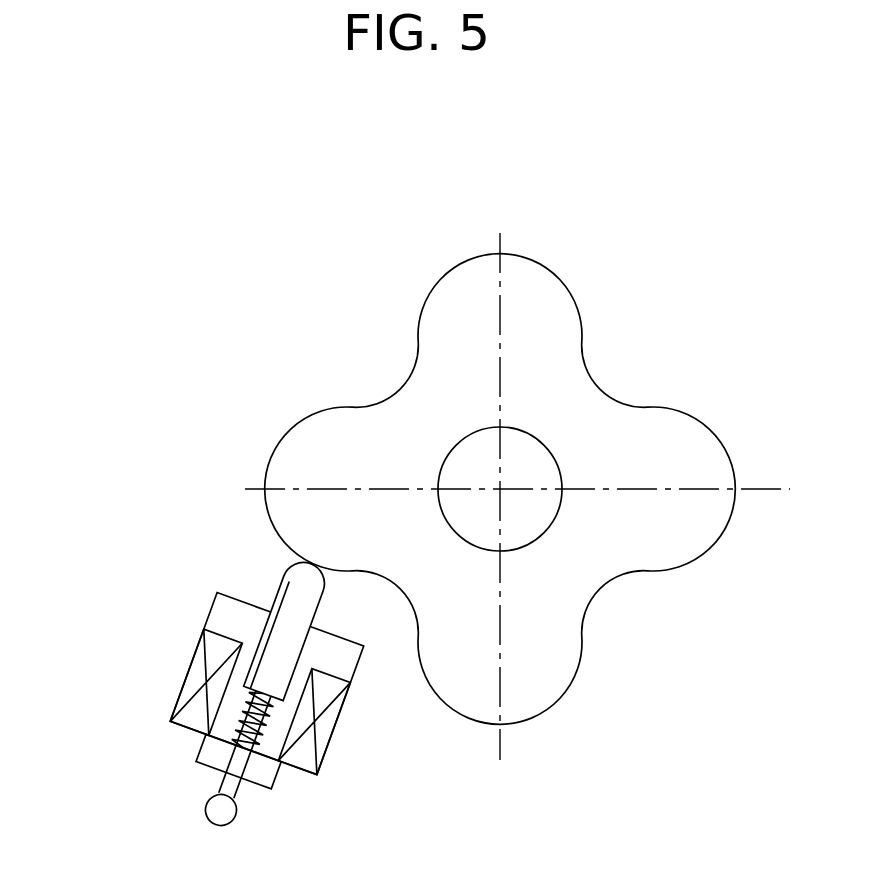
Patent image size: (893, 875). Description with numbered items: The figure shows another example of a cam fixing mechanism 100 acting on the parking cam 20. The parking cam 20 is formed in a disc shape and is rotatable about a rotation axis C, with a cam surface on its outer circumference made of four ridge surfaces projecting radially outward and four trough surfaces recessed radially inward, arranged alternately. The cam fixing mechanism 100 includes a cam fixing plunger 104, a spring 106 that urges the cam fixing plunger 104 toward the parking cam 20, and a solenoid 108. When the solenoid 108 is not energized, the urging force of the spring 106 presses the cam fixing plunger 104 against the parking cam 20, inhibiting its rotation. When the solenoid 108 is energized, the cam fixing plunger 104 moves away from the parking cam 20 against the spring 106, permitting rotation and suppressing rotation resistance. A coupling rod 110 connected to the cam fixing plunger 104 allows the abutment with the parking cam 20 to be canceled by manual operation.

The parking cam 20 is at (650, 347).
The rotation axis C is at (500, 488).
The cam fixing mechanism 100 is at (158, 603).
The cam fixing plunger 104 is at (287, 629).
The spring 106 is at (206, 682).
The solenoid 108 is at (314, 722).
The coupling rod 110 is at (253, 721).